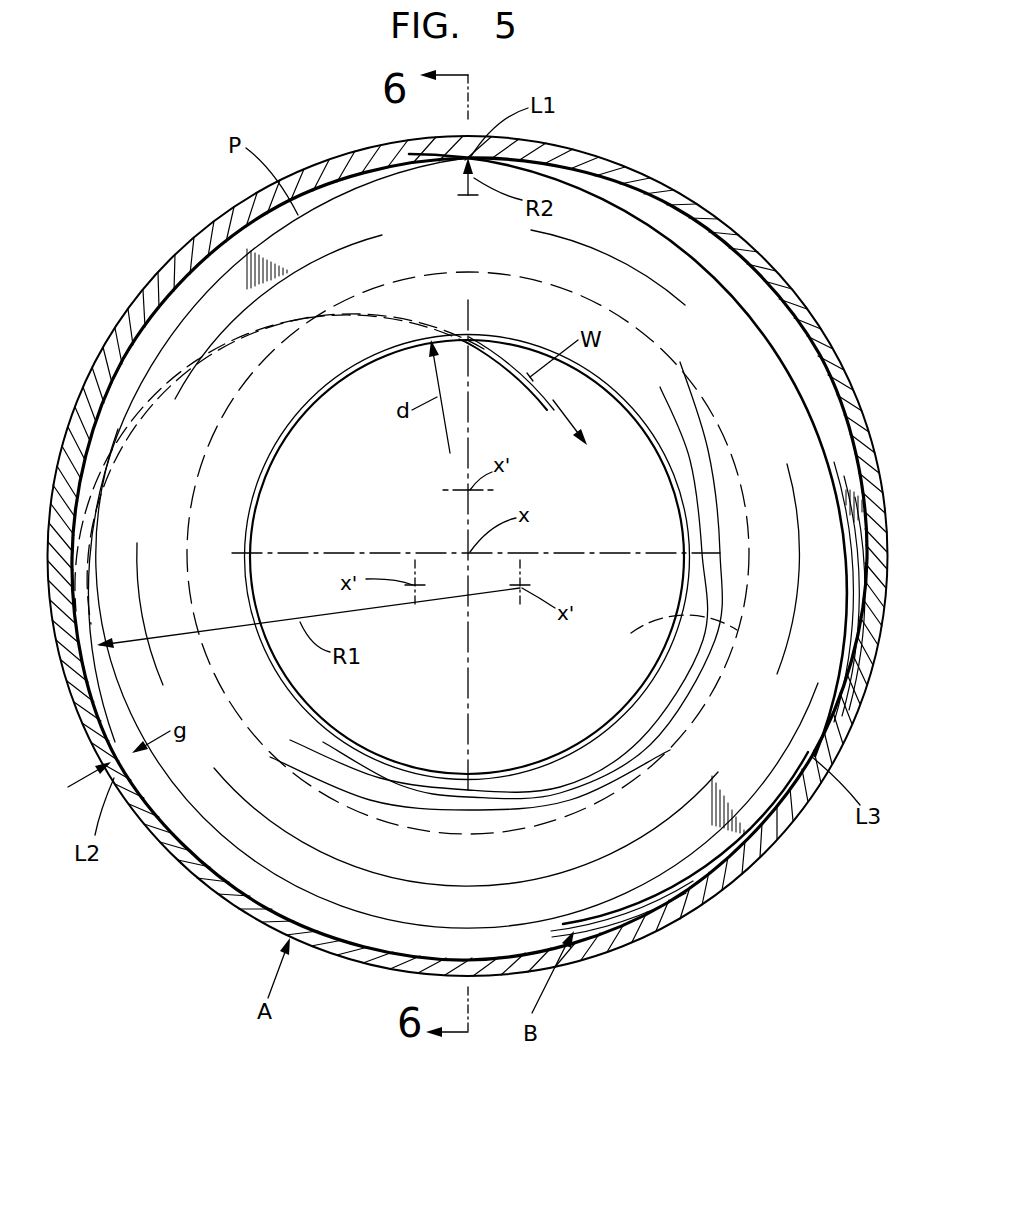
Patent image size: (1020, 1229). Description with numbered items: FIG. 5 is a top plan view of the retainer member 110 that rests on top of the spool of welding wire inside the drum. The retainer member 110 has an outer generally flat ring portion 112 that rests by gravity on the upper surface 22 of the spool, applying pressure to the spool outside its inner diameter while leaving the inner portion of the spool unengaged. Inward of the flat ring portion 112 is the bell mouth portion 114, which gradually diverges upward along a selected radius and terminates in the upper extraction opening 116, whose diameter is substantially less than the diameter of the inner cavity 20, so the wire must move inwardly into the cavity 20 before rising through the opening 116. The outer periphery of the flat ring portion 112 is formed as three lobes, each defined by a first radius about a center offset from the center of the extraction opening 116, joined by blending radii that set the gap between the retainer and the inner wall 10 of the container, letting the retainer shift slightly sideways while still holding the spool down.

The inner wall 10 is at (752, 262).
The inner cavity 20 is at (652, 626).
The upper surface 22 is at (360, 930).
The retainer member 110 is at (241, 854).
The outer generally flat ring portion 112 is at (666, 256).
The bell mouth portion 114 is at (607, 753).
The upper extraction opening 116 is at (323, 717).